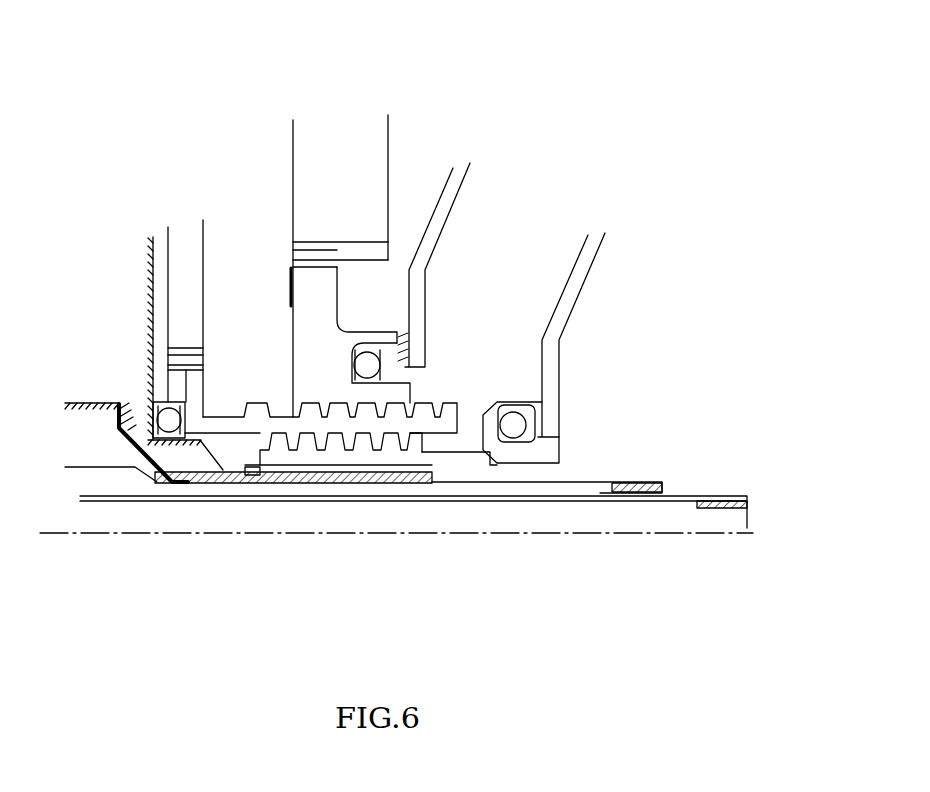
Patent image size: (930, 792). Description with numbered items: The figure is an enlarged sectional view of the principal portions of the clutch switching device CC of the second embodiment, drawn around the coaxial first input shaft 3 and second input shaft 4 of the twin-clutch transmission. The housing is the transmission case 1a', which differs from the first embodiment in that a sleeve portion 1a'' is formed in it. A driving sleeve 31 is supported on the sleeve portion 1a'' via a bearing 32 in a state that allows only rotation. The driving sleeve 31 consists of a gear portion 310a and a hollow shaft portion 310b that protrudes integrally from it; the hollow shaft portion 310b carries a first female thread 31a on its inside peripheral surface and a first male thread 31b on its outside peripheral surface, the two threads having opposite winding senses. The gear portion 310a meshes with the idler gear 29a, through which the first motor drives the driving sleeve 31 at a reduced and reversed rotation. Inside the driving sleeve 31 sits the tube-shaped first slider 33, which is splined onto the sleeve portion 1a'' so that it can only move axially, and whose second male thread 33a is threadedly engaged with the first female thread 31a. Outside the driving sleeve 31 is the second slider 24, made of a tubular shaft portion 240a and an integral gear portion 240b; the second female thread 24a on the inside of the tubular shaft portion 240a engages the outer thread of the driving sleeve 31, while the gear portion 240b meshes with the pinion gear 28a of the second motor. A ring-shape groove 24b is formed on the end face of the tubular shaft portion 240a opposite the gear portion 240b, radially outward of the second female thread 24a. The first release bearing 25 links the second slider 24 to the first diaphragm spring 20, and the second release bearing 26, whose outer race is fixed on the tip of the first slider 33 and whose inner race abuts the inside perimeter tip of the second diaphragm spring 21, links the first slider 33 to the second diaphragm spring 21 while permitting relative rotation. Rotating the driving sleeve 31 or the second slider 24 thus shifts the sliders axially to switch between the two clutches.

The transmission case 1a' is at (129, 358).
The sleeve portion 1a'' is at (293, 535).
The first input shaft 3 is at (703, 498).
The second input shaft 4 is at (595, 482).
The first diaphragm spring 20 is at (450, 197).
The second diaphragm spring 21 is at (585, 267).
The second slider 24 is at (513, 73).
The second female thread 24a is at (350, 403).
The ring-shape groove 24b is at (428, 366).
The tubular shaft portion 240a is at (384, 332).
The gear portion 240b is at (322, 280).
The first release bearing 25 is at (373, 358).
The second release bearing 26 is at (518, 410).
The pinion gear 28a is at (312, 153).
The idler gear 29a is at (183, 257).
The driving sleeve 31 is at (138, 636).
The first female thread 31a is at (293, 437).
The first male thread 31b is at (448, 407).
The gear portion 310a is at (187, 381).
The hollow shaft portion 310b is at (262, 422).
The bearing 32 is at (150, 400).
The first slider 33 is at (317, 479).
The second male thread 33a is at (415, 446).
The clutch switching device CC is at (758, 137).